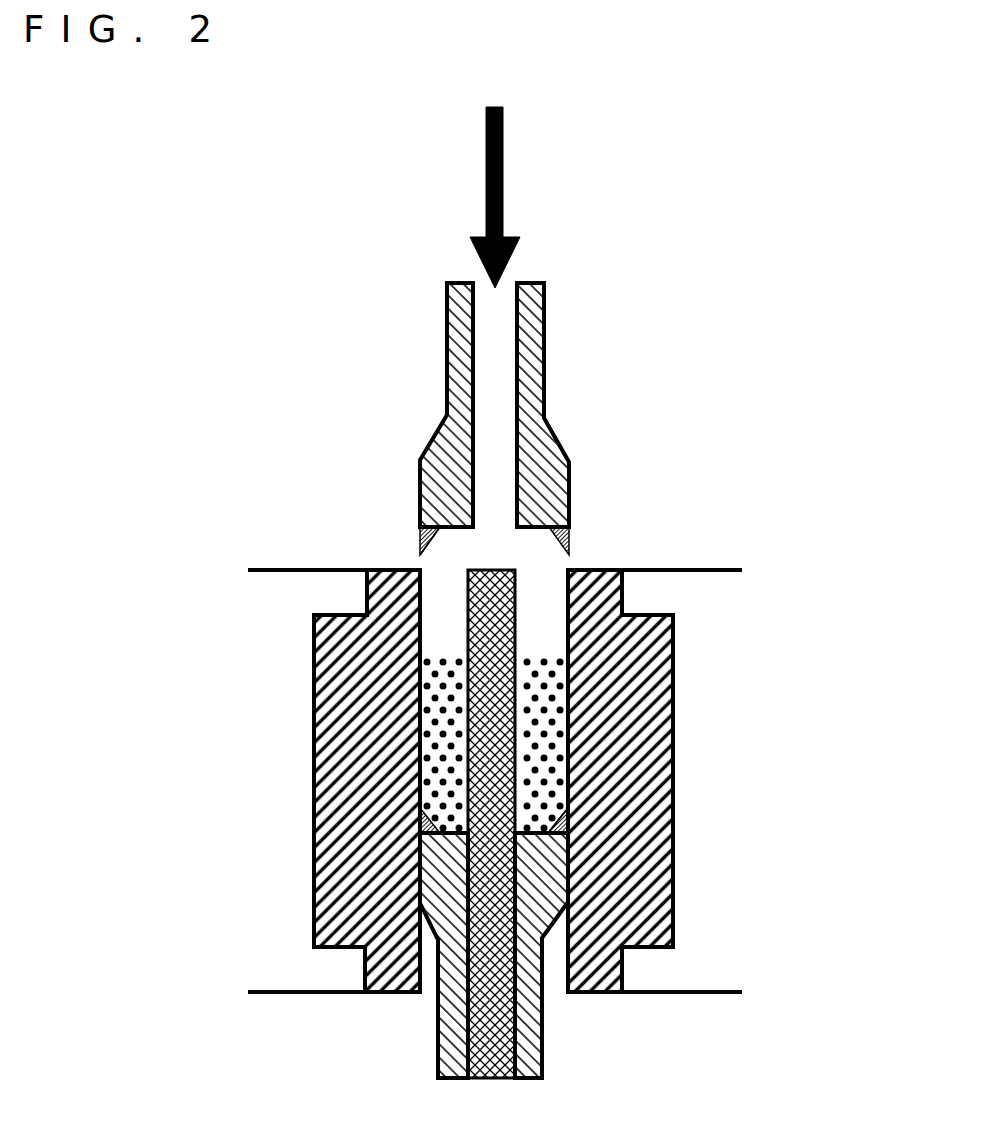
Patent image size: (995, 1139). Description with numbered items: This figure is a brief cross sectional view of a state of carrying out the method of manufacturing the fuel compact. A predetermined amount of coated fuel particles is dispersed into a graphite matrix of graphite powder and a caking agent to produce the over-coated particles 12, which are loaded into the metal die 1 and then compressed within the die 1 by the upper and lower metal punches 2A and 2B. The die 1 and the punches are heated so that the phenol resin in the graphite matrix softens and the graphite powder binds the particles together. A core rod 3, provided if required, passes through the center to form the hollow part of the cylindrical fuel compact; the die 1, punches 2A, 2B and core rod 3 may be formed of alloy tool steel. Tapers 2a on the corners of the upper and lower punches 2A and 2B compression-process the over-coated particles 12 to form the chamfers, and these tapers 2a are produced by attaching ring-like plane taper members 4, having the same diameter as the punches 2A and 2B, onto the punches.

The metal die 1 is at (367, 713).
The upper metal punch 2A is at (447, 340).
The lower metal punch 2B is at (438, 1010).
The taper 2a is at (430, 533).
The core rod 3 is at (470, 640).
The ring-like plane taper member 4 is at (570, 537).
The over-coated particles 12 is at (415, 792).